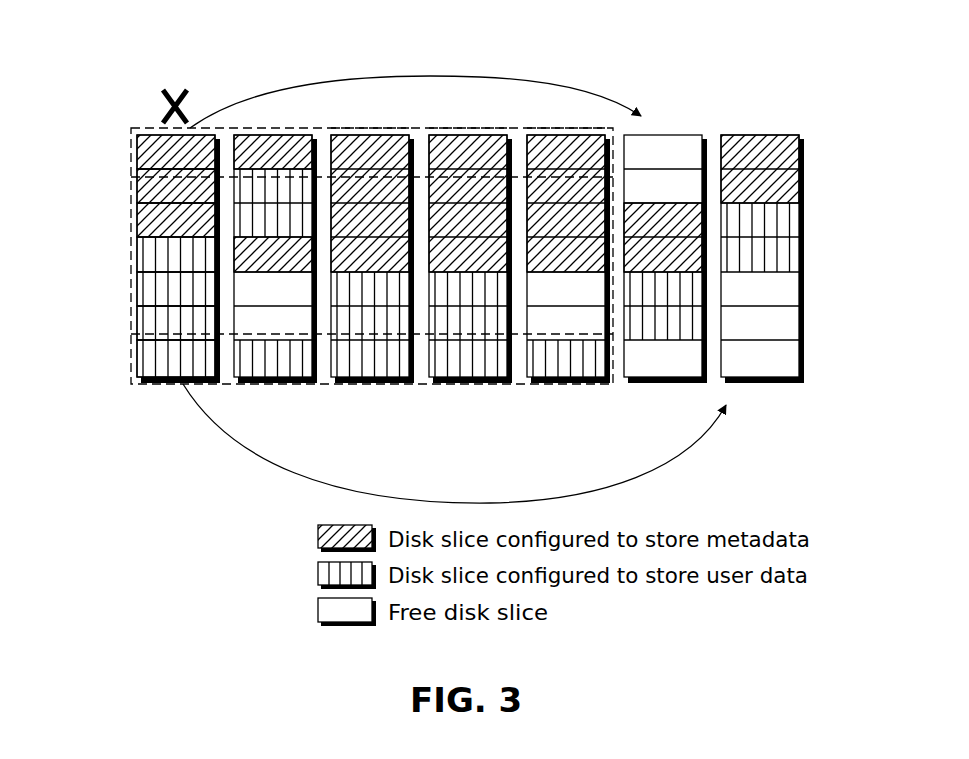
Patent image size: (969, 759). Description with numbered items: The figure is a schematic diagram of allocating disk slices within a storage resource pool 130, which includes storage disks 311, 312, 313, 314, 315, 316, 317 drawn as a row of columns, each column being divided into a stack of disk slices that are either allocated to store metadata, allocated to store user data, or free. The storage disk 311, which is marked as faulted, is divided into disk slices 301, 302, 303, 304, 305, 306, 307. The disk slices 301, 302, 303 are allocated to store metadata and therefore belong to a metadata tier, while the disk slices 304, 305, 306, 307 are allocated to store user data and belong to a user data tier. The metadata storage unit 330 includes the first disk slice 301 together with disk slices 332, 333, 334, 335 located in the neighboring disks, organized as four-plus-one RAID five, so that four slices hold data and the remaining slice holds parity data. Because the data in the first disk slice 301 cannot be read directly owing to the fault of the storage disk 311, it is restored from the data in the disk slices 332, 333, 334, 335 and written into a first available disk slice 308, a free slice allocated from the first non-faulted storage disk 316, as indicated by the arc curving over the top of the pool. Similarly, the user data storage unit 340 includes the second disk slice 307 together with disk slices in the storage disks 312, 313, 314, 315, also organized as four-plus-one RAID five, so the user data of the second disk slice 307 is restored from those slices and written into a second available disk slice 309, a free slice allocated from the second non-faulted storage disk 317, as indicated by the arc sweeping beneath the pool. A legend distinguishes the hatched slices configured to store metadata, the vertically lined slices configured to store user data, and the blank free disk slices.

The storage resource pool 130 is at (184, 67).
The first disk slice 301 is at (132, 157).
The disk slice 302 is at (132, 192).
The disk slice 303 is at (132, 227).
The disk slice 304 is at (132, 259).
The disk slice 305 is at (132, 293).
The disk slice 306 is at (132, 323).
The second disk slice 307 is at (132, 360).
The first available disk slice 308 is at (661, 135).
The second available disk slice 309 is at (804, 357).
The faulted storage disk 311 is at (144, 285).
The storage disk 312 is at (259, 386).
The storage disk 313 is at (359, 386).
The storage disk 314 is at (456, 386).
The storage disk 315 is at (556, 386).
The first non-faulted storage disk 316 is at (653, 386).
The second non-faulted storage disk 317 is at (752, 386).
The metadata storage unit 330 is at (275, 128).
The disk slice 332 is at (252, 128).
The disk slice 333 is at (363, 130).
The disk slice 334 is at (452, 130).
The disk slice 335 is at (543, 130).
The user data storage unit 340 is at (407, 384).